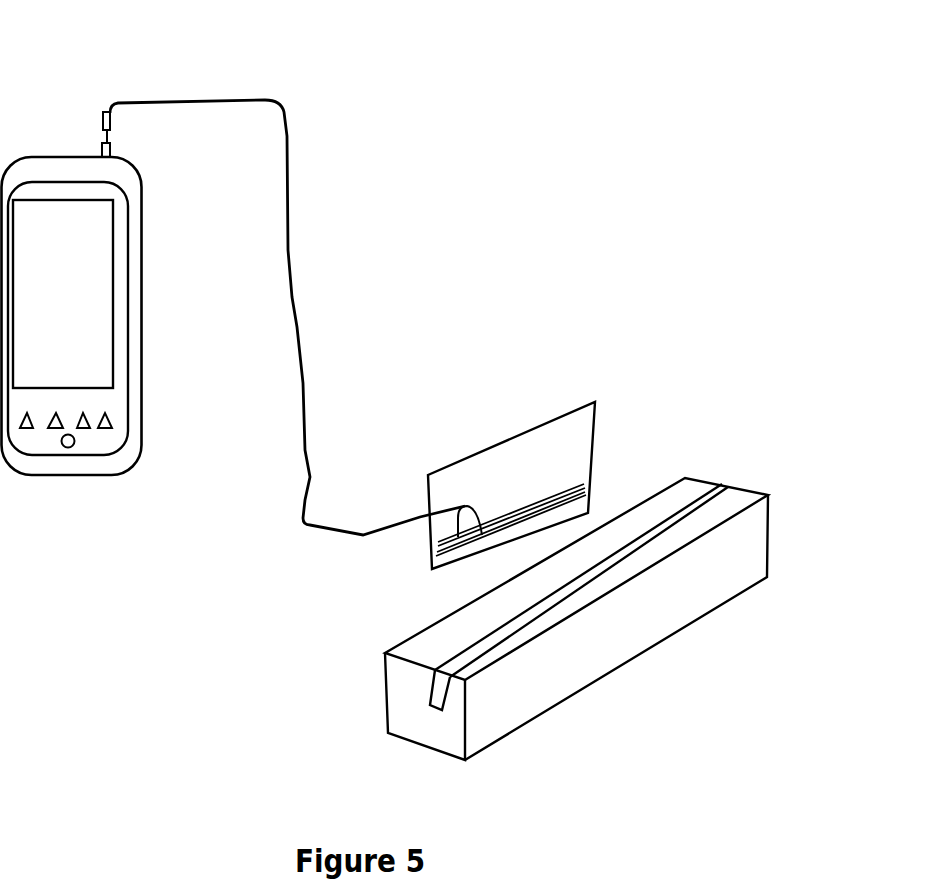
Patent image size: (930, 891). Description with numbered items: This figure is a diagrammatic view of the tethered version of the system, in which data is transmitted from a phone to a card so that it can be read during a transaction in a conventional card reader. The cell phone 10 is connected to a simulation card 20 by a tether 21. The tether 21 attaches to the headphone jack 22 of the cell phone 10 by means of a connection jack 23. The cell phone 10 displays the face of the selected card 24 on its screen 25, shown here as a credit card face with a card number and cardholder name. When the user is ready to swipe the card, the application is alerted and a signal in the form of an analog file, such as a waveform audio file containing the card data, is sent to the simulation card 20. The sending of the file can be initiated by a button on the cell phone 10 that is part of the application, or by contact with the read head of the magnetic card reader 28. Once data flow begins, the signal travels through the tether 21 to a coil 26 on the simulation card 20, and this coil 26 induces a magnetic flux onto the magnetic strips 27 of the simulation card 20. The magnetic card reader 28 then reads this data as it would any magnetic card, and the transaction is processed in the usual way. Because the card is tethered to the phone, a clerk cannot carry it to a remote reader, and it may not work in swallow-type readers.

The cell phone 10 is at (82, 486).
The simulation card 20 is at (552, 401).
The tether 21 is at (302, 267).
The headphone jack 22 is at (110, 151).
The connection jack 23 is at (102, 116).
The selected card 24 is at (103, 367).
The screen 25 is at (123, 275).
The coil 26 is at (477, 522).
The magnetic strips 27 is at (592, 489).
The magnetic card reader 28 is at (538, 697).